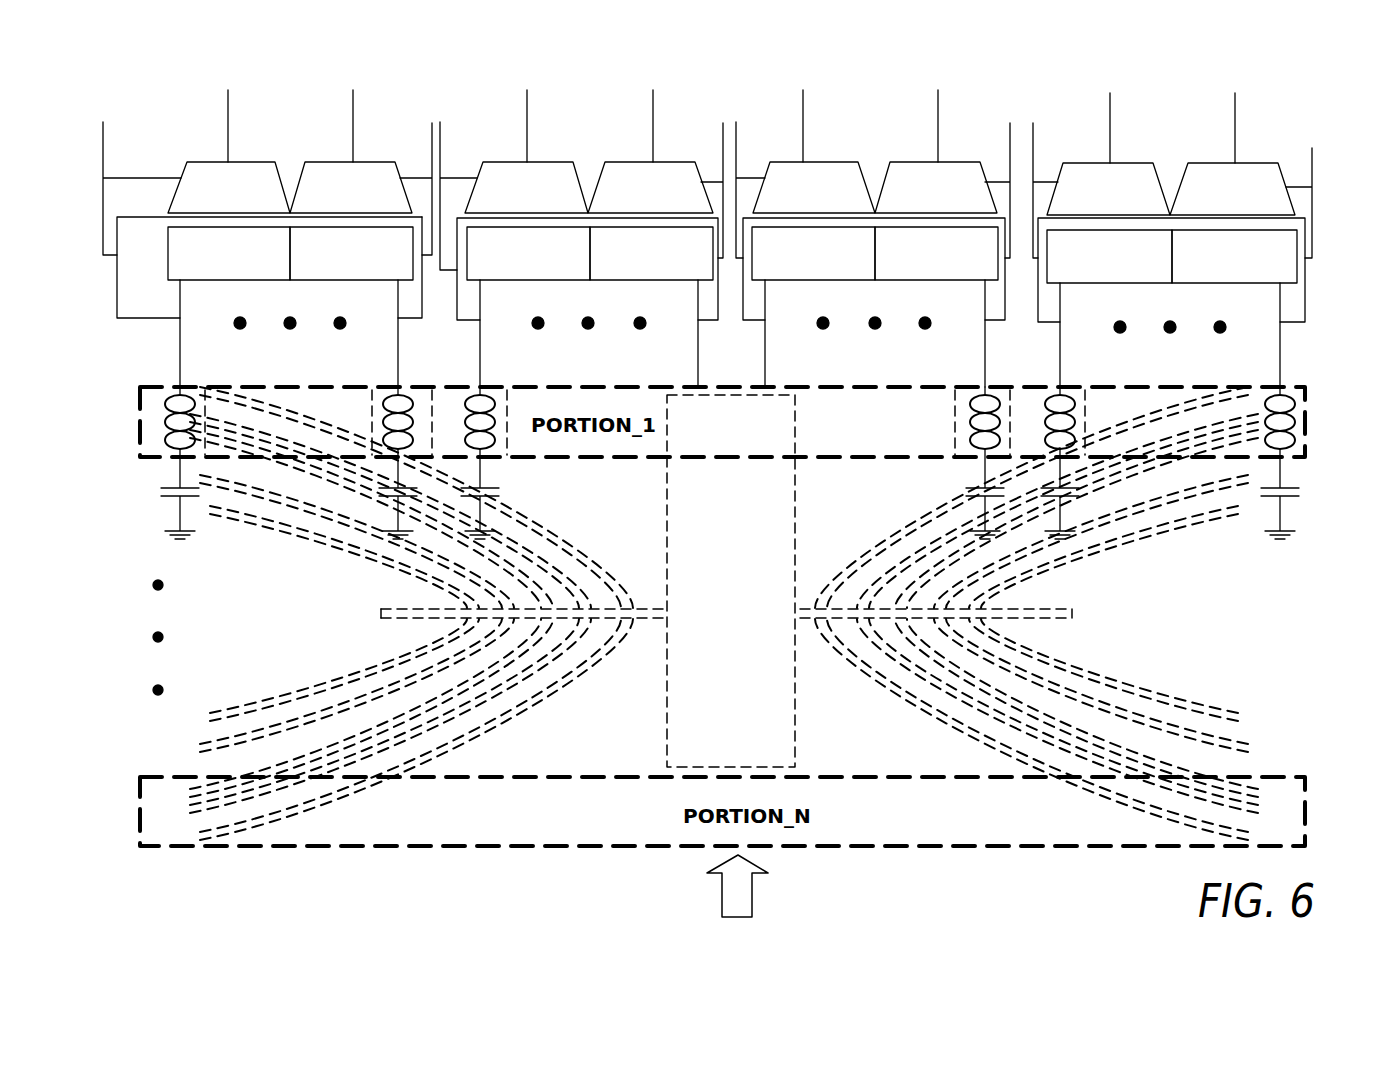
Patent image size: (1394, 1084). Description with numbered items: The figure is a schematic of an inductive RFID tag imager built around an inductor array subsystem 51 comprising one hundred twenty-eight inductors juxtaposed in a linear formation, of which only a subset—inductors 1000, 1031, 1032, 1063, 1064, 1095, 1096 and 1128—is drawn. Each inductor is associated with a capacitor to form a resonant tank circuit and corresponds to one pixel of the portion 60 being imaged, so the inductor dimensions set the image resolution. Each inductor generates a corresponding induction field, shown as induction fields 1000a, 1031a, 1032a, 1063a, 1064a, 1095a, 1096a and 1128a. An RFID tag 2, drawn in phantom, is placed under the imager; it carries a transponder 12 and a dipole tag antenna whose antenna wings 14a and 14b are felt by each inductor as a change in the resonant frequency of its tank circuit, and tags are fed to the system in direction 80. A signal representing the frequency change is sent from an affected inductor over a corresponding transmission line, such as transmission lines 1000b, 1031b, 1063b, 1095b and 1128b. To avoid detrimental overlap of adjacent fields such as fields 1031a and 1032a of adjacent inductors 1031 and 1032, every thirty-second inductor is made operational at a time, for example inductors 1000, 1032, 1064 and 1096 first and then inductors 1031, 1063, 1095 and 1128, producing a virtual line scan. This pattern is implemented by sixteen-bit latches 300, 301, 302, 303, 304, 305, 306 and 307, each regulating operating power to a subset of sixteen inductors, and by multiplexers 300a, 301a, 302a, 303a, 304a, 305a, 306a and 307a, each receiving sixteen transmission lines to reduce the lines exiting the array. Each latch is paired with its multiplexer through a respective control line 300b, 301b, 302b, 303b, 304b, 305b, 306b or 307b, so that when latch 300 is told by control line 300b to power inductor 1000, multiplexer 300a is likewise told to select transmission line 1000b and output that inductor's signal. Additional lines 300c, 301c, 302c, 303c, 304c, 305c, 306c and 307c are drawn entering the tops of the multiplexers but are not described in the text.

The RFID tag 2 is at (815, 733).
The transponder 12 is at (668, 676).
The antenna wing 14a is at (1130, 555).
The antenna wing 14b is at (348, 556).
The inductor array subsystem 51 is at (1300, 116).
The portion being imaged 60 is at (144, 435).
The direction 80 is at (766, 892).
The latch 300 is at (221, 280).
The latch 301 is at (360, 282).
The latch 302 is at (518, 280).
The latch 303 is at (658, 282).
The latch 304 is at (803, 280).
The latch 305 is at (945, 282).
The latch 306 is at (1100, 282).
The latch 307 is at (1240, 282).
The multiplexer 300a is at (245, 162).
The multiplexer 301a is at (325, 162).
The multiplexer 302a is at (544, 162).
The multiplexer 303a is at (629, 162).
The multiplexer 304a is at (827, 161).
The multiplexer 305a is at (907, 160).
The multiplexer 306a is at (1125, 160).
The multiplexer 307a is at (1205, 159).
The control line 300b is at (104, 141).
The control line 301b is at (432, 132).
The control line 302b is at (441, 129).
The control line 303b is at (728, 132).
The control line 304b is at (737, 130).
The control line 305b is at (1018, 130).
The control line 306b is at (1034, 130).
The control line 307b is at (1313, 176).
The multiplexer select line 300c is at (229, 101).
The multiplexer select line 301c is at (353, 101).
The multiplexer select line 302c is at (526, 99).
The multiplexer select line 303c is at (652, 103).
The multiplexer select line 304c is at (802, 99).
The multiplexer select line 305c is at (936, 99).
The multiplexer select line 306c is at (1109, 101).
The multiplexer select line 307c is at (1233, 101).
The inductor 1000 is at (149, 333).
The inductor 1031 is at (386, 388).
The inductor 1032 is at (509, 333).
The inductor 1063 is at (671, 333).
The inductor 1064 is at (792, 333).
The inductor 1095 is at (961, 333).
The inductor 1096 is at (1089, 335).
The inductor 1128 is at (1256, 335).
The induction field 1000a is at (188, 381).
The induction field 1031a is at (374, 398).
The induction field 1032a is at (488, 457).
The induction field 1063a is at (669, 458).
The induction field 1064a is at (796, 457).
The induction field 1095a is at (969, 458).
The induction field 1096a is at (1088, 398).
The induction field 1128a is at (1308, 400).
The transmission line 1000b is at (119, 318).
The transmission line 1031b is at (400, 320).
The transmission line 1063b is at (698, 320).
The transmission line 1095b is at (983, 320).
The transmission line 1128b is at (1292, 315).